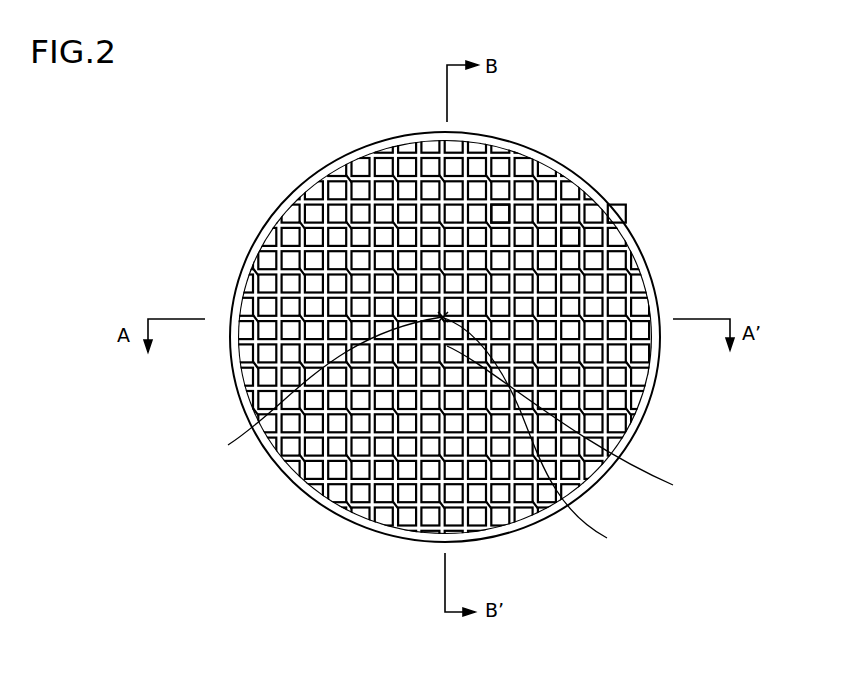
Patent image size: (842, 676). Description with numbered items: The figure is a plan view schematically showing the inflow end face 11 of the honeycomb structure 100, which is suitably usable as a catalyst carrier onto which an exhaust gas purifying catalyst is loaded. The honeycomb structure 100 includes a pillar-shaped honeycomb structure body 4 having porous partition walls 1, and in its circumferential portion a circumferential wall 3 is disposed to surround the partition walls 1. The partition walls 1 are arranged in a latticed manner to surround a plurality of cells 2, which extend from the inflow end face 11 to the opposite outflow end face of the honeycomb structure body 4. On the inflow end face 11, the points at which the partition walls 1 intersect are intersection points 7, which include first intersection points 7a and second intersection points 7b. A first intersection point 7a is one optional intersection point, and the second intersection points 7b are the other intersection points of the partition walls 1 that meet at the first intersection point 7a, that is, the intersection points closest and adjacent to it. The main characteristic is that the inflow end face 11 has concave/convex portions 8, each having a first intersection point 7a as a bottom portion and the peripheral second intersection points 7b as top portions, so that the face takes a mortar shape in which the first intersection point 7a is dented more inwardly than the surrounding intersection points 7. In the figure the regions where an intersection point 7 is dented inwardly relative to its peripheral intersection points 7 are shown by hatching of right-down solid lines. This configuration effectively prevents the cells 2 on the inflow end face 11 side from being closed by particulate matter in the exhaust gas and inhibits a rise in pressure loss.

The honeycomb structure 100 is at (757, 79).
The inflow end face 11 is at (272, 190).
The partition wall 1 is at (560, 237).
The cell 2 is at (502, 213).
The circumferential wall 3 is at (613, 217).
The honeycomb structure body 4 is at (655, 268).
The intersection point 7 is at (453, 437).
The first intersection point 7a is at (591, 423).
The second intersection point 7b is at (554, 437).
The concave/convex portion 8 is at (443, 308).